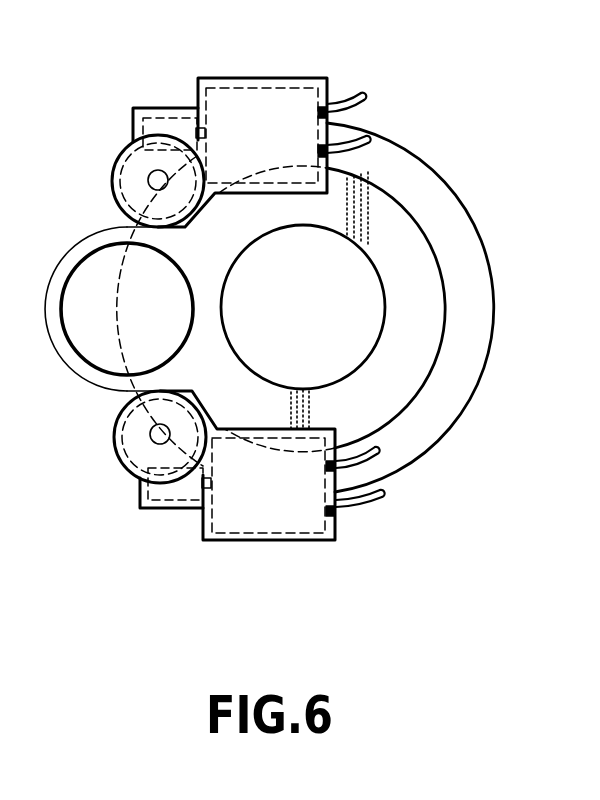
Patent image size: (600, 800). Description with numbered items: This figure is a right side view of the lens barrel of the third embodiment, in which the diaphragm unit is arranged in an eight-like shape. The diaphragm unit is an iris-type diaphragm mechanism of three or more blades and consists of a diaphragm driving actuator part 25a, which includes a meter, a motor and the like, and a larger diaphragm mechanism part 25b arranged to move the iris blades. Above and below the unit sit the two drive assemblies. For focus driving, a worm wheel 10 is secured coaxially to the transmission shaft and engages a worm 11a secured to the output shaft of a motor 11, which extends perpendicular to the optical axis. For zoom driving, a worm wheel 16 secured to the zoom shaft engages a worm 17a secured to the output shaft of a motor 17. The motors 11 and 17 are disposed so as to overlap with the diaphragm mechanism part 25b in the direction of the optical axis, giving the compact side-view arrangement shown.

The worm wheel 10 is at (122, 457).
The motor 11 is at (270, 515).
The worm 11a is at (160, 510).
The worm wheel 16 is at (122, 182).
The motor 17 is at (270, 92).
The worm 17a is at (158, 120).
The diaphragm driving actuator part 25a is at (82, 340).
The diaphragm mechanism part 25b is at (412, 233).